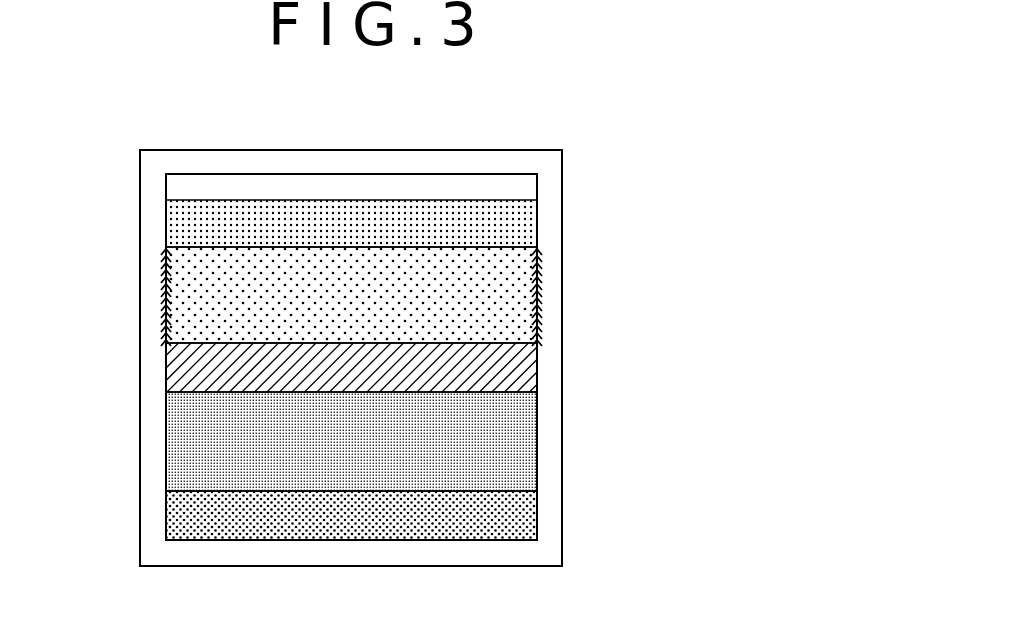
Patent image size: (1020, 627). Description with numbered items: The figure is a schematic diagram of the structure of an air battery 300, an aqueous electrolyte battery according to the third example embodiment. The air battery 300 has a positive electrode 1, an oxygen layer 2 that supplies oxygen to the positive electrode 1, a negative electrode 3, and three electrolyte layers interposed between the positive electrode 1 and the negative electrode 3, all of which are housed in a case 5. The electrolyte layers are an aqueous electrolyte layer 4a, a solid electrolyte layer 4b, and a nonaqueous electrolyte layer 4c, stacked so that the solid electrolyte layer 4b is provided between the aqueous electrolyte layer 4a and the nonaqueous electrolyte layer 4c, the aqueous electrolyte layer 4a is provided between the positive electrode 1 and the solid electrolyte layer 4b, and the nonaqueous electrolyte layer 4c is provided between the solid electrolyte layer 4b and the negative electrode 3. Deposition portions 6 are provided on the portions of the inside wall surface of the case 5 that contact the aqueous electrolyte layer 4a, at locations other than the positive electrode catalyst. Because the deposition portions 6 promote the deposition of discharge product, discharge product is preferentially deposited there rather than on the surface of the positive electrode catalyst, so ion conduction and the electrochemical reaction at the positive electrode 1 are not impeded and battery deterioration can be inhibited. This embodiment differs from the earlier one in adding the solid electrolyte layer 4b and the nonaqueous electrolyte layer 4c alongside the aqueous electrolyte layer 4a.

The air battery 300 is at (328, 101).
The positive electrode 1 is at (238, 212).
The oxygen layer 2 is at (302, 187).
The negative electrode 3 is at (487, 527).
The aqueous electrolyte layer 4a is at (498, 258).
The solid electrolyte layer 4b is at (518, 375).
The nonaqueous electrolyte layer 4c is at (512, 460).
The case 5 is at (548, 542).
The deposition portions 6 is at (155, 290).